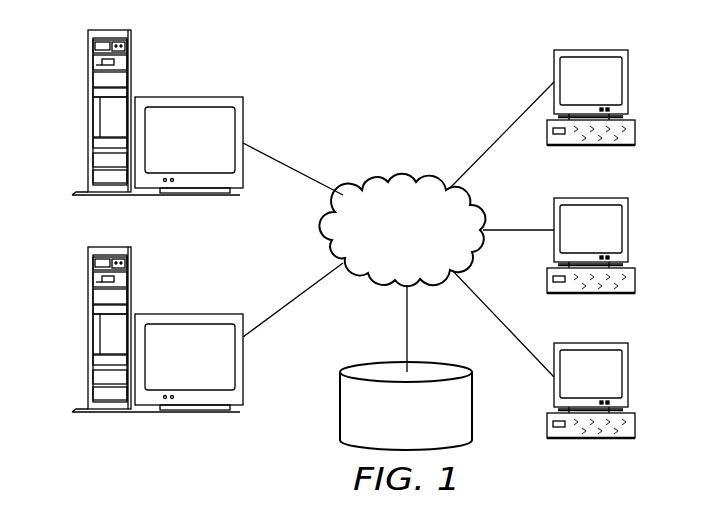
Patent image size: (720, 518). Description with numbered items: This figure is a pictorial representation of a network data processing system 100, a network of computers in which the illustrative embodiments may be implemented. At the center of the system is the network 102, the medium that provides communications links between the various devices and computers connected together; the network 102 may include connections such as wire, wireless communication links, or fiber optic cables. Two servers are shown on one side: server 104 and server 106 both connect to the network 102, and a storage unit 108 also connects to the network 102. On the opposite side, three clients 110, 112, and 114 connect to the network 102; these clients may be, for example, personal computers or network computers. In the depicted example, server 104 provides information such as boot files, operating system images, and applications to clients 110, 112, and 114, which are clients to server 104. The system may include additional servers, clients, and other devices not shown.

The network data processing system 100 is at (457, 73).
The network 102 is at (376, 180).
The server 104 is at (87, 113).
The server 106 is at (87, 330).
The storage unit 108 is at (340, 413).
The client 110 is at (628, 82).
The client 112 is at (628, 230).
The client 114 is at (628, 375).